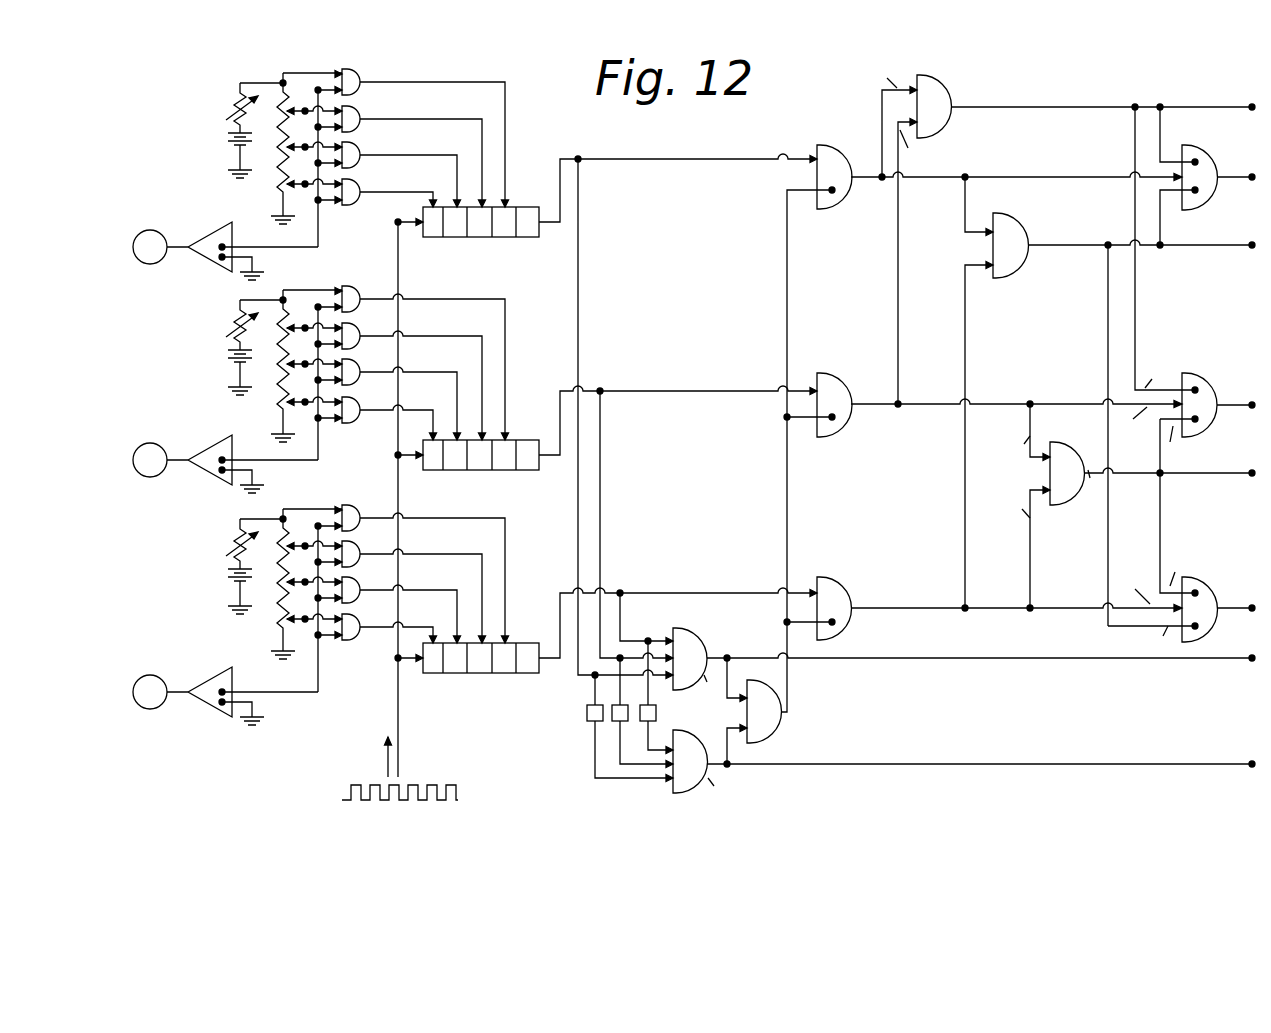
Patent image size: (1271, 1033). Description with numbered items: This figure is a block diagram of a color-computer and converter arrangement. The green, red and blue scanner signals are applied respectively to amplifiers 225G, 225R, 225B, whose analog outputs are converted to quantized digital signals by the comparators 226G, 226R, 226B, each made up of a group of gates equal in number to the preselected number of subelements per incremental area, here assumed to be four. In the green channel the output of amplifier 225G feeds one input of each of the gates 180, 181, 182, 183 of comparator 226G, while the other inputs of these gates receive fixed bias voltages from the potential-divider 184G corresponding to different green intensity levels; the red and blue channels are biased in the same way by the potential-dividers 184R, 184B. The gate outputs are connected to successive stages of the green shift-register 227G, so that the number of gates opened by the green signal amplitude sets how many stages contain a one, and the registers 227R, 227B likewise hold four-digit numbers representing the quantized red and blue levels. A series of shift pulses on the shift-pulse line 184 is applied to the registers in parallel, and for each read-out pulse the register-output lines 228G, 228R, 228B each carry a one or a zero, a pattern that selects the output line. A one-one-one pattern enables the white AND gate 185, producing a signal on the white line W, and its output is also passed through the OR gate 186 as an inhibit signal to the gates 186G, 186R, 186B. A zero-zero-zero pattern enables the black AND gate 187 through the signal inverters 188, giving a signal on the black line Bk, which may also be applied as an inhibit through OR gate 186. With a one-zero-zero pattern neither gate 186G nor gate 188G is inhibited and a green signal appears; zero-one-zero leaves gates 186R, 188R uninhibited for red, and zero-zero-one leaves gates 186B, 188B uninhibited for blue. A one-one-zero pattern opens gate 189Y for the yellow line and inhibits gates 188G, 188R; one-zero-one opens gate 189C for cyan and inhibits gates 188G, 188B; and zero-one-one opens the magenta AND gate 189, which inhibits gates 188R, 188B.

The gate 180 is at (358, 186).
The gate 181 is at (358, 149).
The gate 182 is at (358, 113).
The gate 183 is at (360, 78).
The clock line 184 is at (398, 728).
The potential-divider 184G is at (280, 158).
The potential-divider 184R is at (286, 400).
The potential-divider 184B is at (278, 613).
The white AND gate 185 is at (696, 633).
The OR gate 186 is at (777, 731).
The gate 186G is at (824, 145).
The gate 186R is at (824, 373).
The gate 186B is at (830, 577).
The black AND gate 187 is at (694, 724).
The signal inverters 188 is at (640, 723).
The gate 188G is at (1202, 160).
The gate 188R is at (1197, 372).
The gate 188B is at (1196, 578).
The magenta AND gate 189 is at (1060, 444).
The gate 189Y is at (945, 87).
The gate 189C is at (1020, 224).
The amplifier 225G is at (203, 259).
The amplifier 225R is at (203, 472).
The amplifier 225B is at (203, 706).
The comparator 226G is at (383, 56).
The comparator 226R is at (384, 271).
The comparator 226B is at (384, 493).
The green shift-register 227G is at (483, 238).
The shift-register 227R is at (458, 471).
The shift-register 227B is at (458, 675).
The register-output line 228G is at (558, 172).
The register-output line 228R is at (557, 400).
The register-output line 228B is at (558, 605).